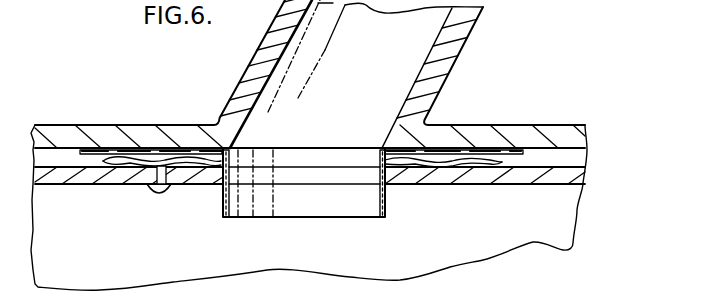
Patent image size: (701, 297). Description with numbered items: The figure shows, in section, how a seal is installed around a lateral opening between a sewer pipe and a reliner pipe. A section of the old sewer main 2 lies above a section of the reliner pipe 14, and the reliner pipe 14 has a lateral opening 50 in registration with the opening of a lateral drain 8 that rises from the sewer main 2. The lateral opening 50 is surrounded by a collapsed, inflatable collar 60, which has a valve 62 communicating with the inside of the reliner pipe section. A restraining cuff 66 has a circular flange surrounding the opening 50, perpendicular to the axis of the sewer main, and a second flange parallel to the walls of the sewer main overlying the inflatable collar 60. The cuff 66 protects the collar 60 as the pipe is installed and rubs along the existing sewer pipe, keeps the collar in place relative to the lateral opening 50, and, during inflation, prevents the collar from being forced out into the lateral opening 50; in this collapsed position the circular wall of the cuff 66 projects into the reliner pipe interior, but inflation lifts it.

The old sewer main 2 is at (133, 125).
The lateral drain 8 is at (353, 79).
The reliner pipe 14 is at (92, 185).
The lateral opening 50 is at (330, 178).
The inflatable collar 60 is at (448, 164).
The valve 62 is at (164, 192).
The restraining cuff 66 is at (238, 186).